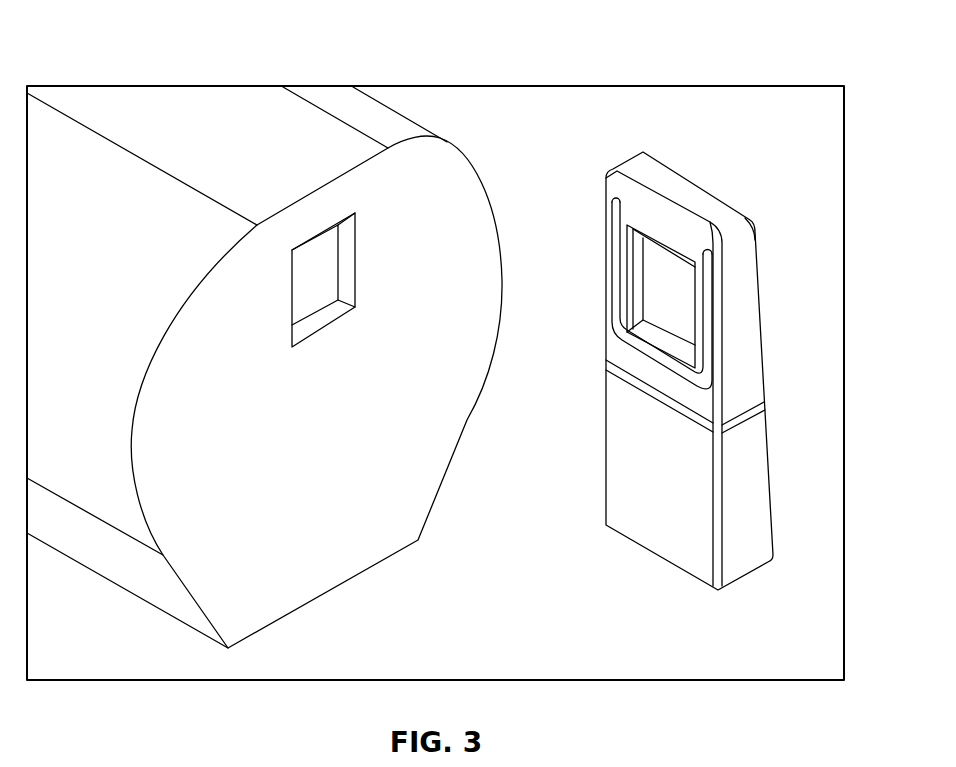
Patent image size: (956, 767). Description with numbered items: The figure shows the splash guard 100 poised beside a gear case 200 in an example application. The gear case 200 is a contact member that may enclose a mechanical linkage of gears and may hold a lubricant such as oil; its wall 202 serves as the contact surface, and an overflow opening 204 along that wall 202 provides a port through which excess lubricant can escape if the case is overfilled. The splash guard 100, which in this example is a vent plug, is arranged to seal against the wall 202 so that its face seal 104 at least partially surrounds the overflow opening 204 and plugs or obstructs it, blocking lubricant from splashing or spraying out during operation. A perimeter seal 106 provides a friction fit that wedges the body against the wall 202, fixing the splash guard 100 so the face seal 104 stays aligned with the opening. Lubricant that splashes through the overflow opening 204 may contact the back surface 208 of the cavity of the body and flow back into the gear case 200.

The splash guard 100 is at (663, 355).
The face seal 104 is at (638, 358).
The perimeter seal 106 is at (638, 388).
The gear case 200 is at (258, 123).
The wall 202 is at (457, 217).
The overflow opening 204 is at (324, 224).
The back surface 208 is at (660, 273).